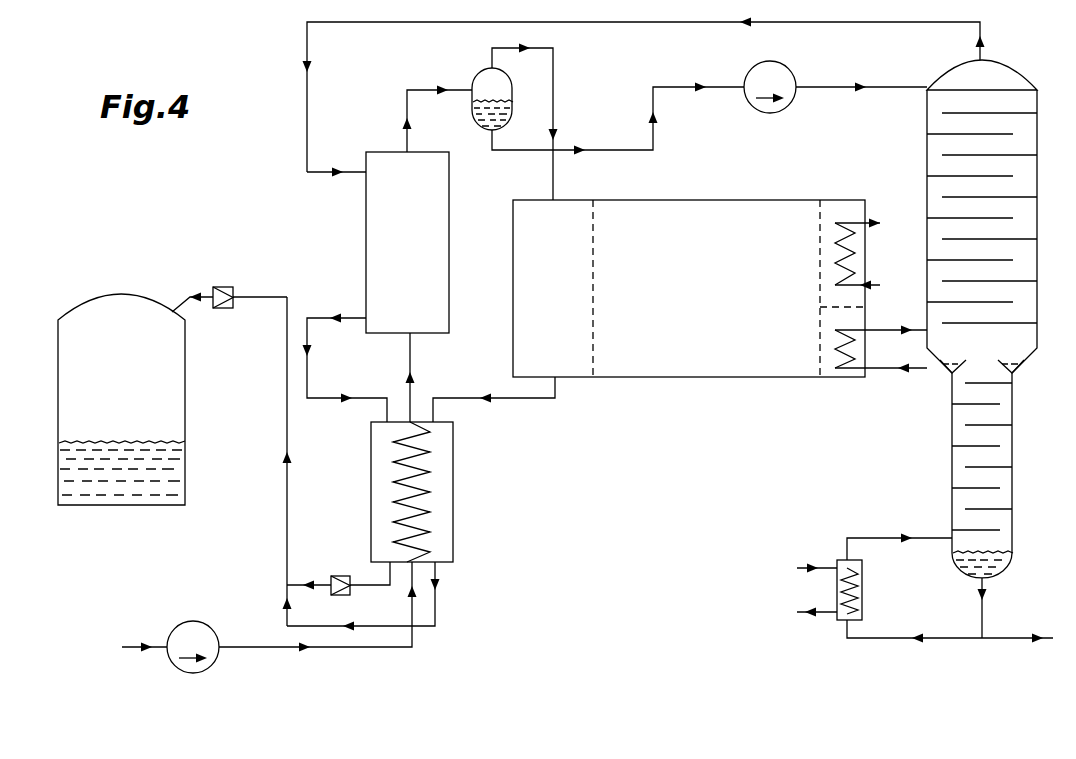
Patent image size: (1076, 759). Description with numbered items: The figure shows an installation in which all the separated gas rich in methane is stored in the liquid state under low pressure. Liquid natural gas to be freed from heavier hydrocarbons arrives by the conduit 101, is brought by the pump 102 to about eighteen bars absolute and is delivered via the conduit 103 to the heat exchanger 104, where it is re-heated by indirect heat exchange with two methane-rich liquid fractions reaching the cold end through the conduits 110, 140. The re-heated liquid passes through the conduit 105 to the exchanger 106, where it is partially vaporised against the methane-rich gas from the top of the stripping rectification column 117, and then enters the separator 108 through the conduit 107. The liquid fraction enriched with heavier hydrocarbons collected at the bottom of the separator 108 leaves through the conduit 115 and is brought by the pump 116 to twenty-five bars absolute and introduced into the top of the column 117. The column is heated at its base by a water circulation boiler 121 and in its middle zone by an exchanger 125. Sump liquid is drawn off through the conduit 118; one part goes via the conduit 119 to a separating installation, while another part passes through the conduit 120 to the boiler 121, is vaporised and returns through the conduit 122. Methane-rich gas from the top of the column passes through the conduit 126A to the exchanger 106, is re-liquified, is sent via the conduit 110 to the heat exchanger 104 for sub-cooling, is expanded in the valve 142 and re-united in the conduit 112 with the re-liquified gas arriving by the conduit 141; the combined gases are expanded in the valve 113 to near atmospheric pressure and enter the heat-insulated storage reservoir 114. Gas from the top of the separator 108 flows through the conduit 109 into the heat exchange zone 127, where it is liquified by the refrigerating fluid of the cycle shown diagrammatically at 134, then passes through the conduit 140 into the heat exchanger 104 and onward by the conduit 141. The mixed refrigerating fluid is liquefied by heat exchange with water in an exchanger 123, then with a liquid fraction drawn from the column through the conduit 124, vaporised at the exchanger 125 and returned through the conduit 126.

The conduit 101 is at (123, 647).
The pump 102 is at (190, 621).
The conduit 103 is at (337, 647).
The heat exchanger 104 is at (371, 474).
The conduit 105 is at (410, 358).
The exchanger 106 is at (449, 234).
The conduit 107 is at (410, 90).
The separator 108 is at (512, 92).
The conduit 109 is at (553, 70).
The conduit 110 is at (307, 370).
The conduit 112 is at (287, 440).
The valve 113 is at (224, 287).
The heat-insulated storage reservoir 114 is at (185, 384).
The conduit 115 is at (610, 150).
The pump 116 is at (765, 113).
The stripping rectification column 117 is at (927, 146).
The conduit 118 is at (982, 604).
The conduit 119 is at (1010, 638).
The conduit 120 is at (890, 638).
The water circulation boiler 121 is at (862, 576).
The conduit 122 is at (917, 538).
The exchanger 123 is at (865, 243).
The conduit 124 is at (887, 368).
The exchanger 125 is at (860, 352).
The conduit 126 is at (880, 330).
The conduit 126A is at (835, 22).
The heat exchange zone 127 is at (513, 296).
The refrigerating cycle 134 is at (708, 200).
The conduit 140 is at (513, 398).
The conduit 141 is at (435, 605).
The valve 142 is at (338, 576).